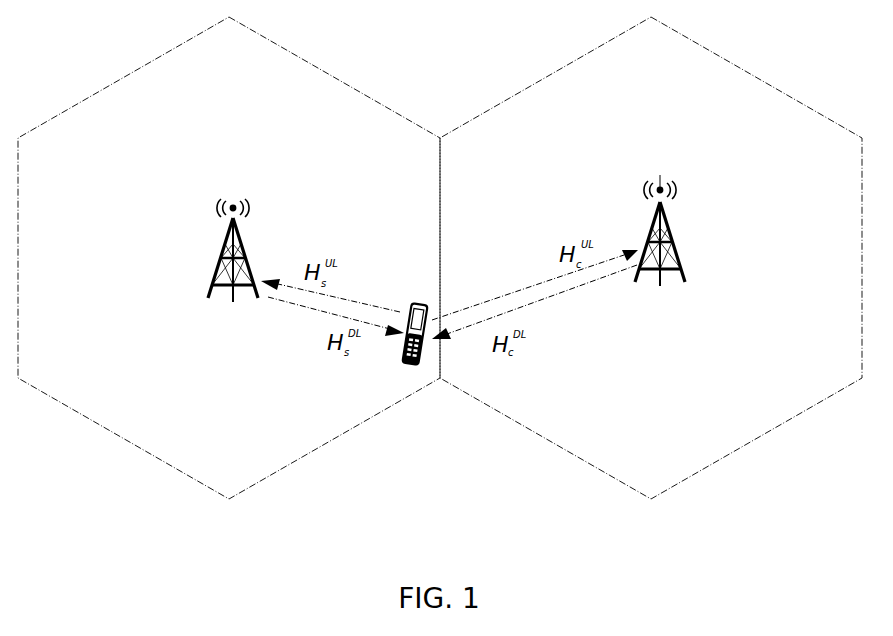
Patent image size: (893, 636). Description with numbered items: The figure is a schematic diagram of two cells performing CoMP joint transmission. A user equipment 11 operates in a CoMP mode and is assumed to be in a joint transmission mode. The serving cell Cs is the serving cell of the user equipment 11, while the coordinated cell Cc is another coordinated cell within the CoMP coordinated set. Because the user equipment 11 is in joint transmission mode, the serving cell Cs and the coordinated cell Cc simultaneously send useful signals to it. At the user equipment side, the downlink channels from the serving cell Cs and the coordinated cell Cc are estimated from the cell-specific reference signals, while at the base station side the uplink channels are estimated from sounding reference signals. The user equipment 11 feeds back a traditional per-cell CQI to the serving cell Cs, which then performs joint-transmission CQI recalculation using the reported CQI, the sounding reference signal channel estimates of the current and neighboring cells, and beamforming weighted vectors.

The user equipment 11 is at (398, 347).
The serving cell Cs is at (233, 234).
The coordinated cell Cc is at (660, 216).